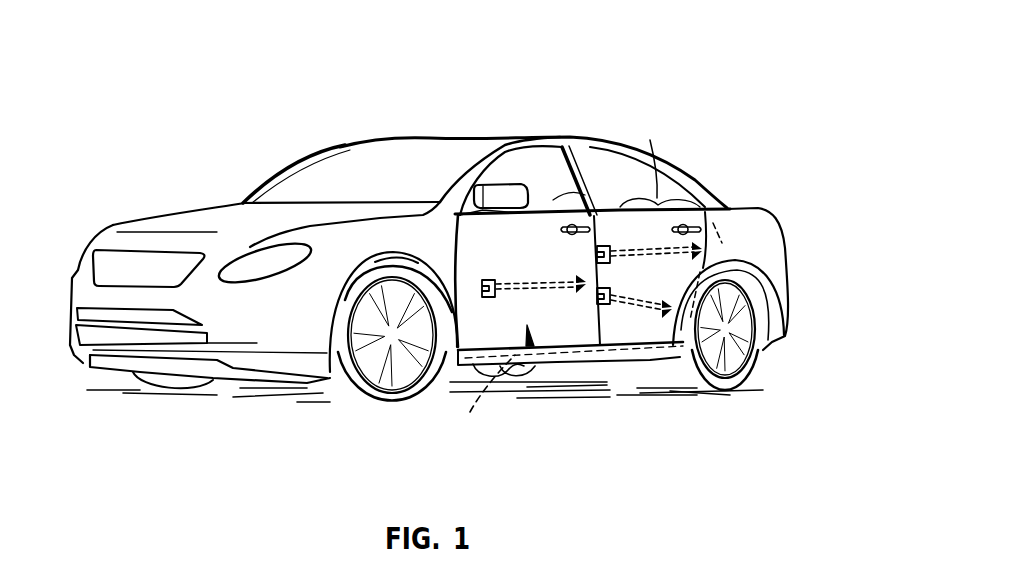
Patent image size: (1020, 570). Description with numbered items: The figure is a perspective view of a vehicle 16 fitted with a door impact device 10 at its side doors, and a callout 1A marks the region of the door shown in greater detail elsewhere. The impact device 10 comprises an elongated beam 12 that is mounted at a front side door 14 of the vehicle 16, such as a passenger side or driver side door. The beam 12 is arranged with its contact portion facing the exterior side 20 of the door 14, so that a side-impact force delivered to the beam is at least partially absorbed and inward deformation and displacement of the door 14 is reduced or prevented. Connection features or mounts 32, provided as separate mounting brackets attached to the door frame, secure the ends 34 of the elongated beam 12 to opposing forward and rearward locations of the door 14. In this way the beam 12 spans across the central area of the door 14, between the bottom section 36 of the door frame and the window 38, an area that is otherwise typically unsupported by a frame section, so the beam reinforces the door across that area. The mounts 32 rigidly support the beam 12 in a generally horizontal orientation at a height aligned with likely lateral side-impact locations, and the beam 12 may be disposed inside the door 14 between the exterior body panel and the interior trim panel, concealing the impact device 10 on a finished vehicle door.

The door impact device 10 is at (529, 348).
The elongated beam 12 is at (482, 395).
The door 14 is at (530, 247).
The vehicle 16 is at (707, 127).
The exterior side 20 is at (510, 236).
The mounts 32 is at (482, 285).
The ends 34 is at (488, 280).
The bottom section 36 is at (553, 330).
The window 38 is at (512, 168).
The detail region of FIG. 1A is at (637, 197).